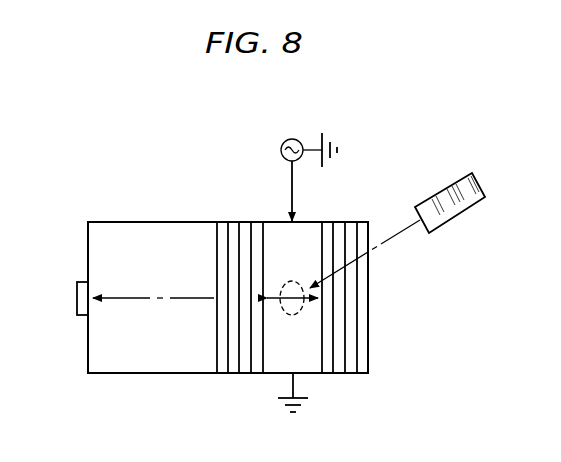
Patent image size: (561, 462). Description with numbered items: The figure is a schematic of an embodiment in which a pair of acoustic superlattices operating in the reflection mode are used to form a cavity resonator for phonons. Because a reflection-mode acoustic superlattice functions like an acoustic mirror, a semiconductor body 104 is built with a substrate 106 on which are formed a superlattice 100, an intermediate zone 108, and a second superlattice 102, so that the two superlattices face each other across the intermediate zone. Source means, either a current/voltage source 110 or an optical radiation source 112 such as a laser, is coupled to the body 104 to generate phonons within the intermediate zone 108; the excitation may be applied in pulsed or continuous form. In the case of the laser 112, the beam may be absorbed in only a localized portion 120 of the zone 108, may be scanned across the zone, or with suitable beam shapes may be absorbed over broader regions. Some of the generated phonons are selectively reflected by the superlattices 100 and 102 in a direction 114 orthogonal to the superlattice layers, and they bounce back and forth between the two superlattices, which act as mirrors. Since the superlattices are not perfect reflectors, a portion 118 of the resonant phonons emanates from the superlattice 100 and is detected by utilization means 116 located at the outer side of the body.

The superlattice 100 is at (264, 221).
The superlattice 102 is at (369, 221).
The semiconductor body 104 is at (147, 202).
The substrate 106 is at (175, 374).
The intermediate zone 108 is at (272, 372).
The current/voltage source 110 is at (283, 143).
The optical radiation source 112 is at (456, 213).
The direction 114 is at (283, 311).
The utilization means 116 is at (78, 297).
The portion of resonant phonons 118 is at (143, 300).
The localized portion 120 is at (292, 281).